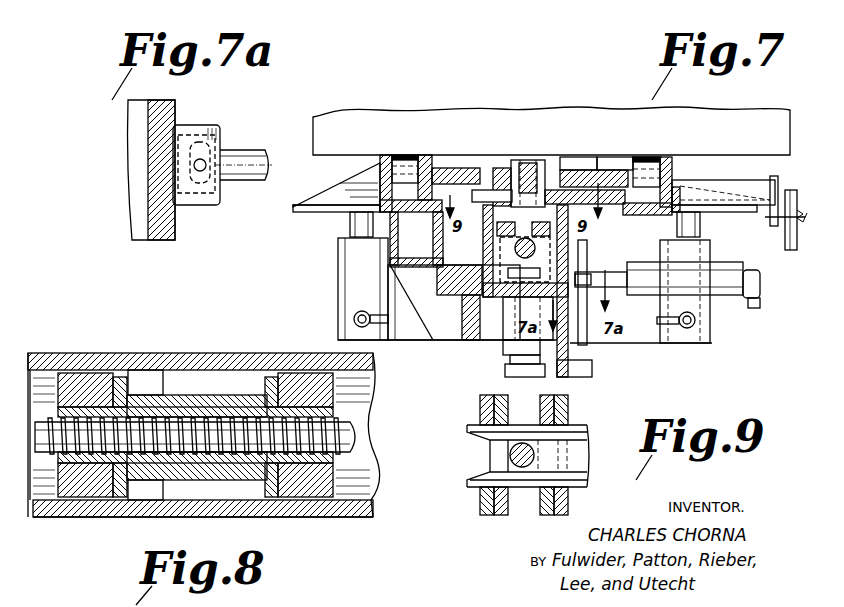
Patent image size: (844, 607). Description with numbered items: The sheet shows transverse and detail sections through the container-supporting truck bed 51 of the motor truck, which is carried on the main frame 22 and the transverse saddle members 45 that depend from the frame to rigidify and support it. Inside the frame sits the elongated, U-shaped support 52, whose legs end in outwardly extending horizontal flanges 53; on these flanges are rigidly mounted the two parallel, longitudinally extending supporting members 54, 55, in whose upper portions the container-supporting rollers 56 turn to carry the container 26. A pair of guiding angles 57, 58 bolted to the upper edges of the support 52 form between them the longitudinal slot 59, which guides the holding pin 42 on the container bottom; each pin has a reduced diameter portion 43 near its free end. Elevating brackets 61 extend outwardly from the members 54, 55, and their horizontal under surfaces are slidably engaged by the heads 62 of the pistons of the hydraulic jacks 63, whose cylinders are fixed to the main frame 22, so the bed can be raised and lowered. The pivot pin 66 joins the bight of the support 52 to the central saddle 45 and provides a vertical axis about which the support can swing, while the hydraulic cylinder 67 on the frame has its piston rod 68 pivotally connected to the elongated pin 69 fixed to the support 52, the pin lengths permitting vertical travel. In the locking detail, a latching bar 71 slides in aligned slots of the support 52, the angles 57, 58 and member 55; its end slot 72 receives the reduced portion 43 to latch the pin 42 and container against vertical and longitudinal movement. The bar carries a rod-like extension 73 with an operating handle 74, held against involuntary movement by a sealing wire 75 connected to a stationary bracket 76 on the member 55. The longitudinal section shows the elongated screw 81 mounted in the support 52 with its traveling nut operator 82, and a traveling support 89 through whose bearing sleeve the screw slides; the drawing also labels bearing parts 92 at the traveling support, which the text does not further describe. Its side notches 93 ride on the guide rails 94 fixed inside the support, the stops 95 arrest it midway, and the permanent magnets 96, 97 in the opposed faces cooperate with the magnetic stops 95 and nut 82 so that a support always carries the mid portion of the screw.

In FIG. 7, the main frame 22 is at (388, 245).
In FIG. 7, the container 26 is at (522, 110).
In FIG. 7, the guiding and holding pin 42 is at (557, 172).
In FIG. 7, the reduced diameter portion 43 is at (575, 170).
In FIG. 9, the reduced diameter portion 43 is at (528, 440).
In FIG. 7, the transverse saddle member 45 is at (445, 332).
In FIG. 7, the truck bed 51 is at (348, 173).
In FIG. 7, the elongated support 52 is at (483, 270).
In FIG. 8, the elongated support 52 is at (338, 515).
In FIG. 7, the horizontal flange 53 is at (440, 170).
In FIG. 7, the supporting member 54 is at (380, 160).
In FIG. 7, the supporting member 55 is at (672, 165).
In FIG. 7, the container-supporting roller 56 is at (408, 157).
In FIG. 7, the guiding angle 57 is at (502, 170).
In FIG. 7, the guiding angle 58 is at (612, 157).
In FIG. 7, the slot 59 is at (528, 162).
In FIG. 7, the elevating bracket 61 is at (313, 212).
In FIG. 7, the piston head 62 is at (351, 224).
In FIG. 7, the hydraulic jack 63 is at (338, 268).
In FIG. 7, the pivot pin 66 is at (508, 364).
In FIG. 7, the hydraulic cylinder 67 is at (740, 250).
In FIG. 7A, the piston rod 68 is at (243, 176).
In FIG. 7, the pin 69 is at (584, 272).
In FIG. 7A, the pin 69 is at (205, 160).
In FIG. 7, the latching bar 71 is at (696, 187).
In FIG. 9, the latching bar 71 is at (572, 480).
In FIG. 9, the slot 72 is at (467, 453).
In FIG. 7, the rod-like extension 73 is at (773, 195).
In FIG. 7, the operating handle 74 is at (791, 250).
In FIG. 7, the sealing wire 75 is at (780, 222).
In FIG. 7, the stationary bracket 76 is at (748, 162).
In FIG. 8, the elongated screw 81 is at (358, 440).
In FIG. 8, the traveling nut operator 82 is at (245, 400).
In FIG. 8, the traveling support 89 is at (96, 375).
In FIG. 8, the bearing 92 is at (160, 410).
In FIG. 7, the notch 93 is at (522, 242).
In FIG. 7, the guide rail 94 is at (486, 232).
In FIG. 8, the guide rail 94 is at (45, 380).
In FIG. 8, the stop 95 is at (150, 378).
In FIG. 8, the permanent magnet 96 is at (121, 385).
In FIG. 8, the permanent magnet 97 is at (275, 385).